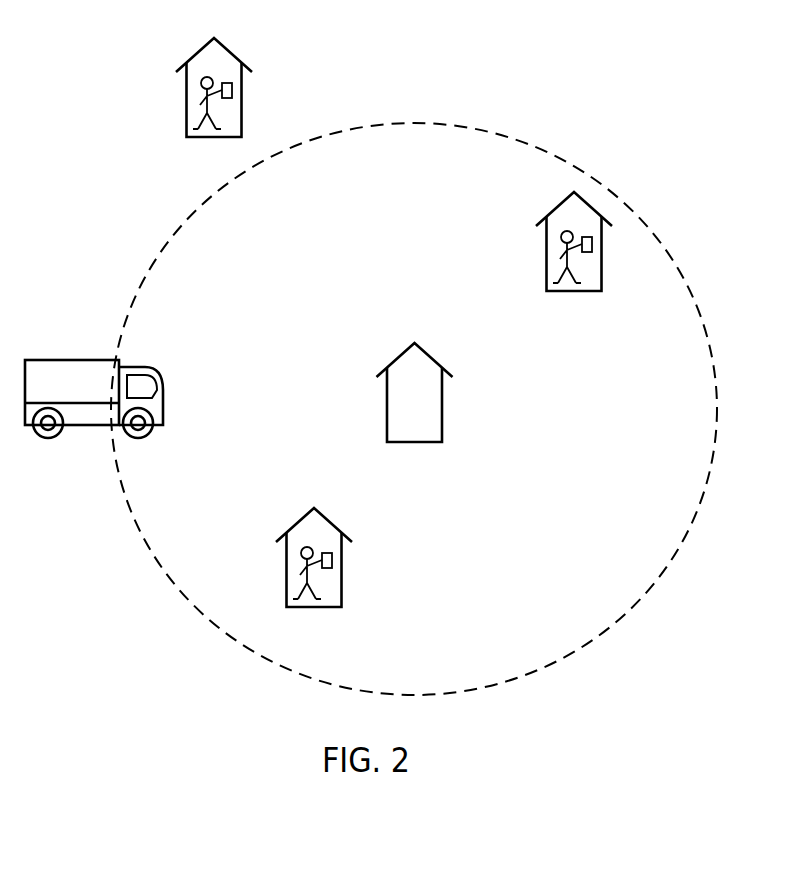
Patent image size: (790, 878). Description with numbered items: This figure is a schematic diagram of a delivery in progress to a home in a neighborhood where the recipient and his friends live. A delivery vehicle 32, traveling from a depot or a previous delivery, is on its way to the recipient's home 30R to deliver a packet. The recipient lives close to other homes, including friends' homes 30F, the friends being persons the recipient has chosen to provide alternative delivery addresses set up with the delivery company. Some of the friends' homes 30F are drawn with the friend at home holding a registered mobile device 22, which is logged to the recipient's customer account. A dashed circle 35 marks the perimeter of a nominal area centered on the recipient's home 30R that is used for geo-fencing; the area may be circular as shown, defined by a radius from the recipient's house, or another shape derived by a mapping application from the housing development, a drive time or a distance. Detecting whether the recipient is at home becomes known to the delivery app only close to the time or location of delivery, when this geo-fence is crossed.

The mobile device 22 is at (588, 253).
The friends' homes 30F is at (186, 101).
The recipient's home 30R is at (386, 408).
The delivery vehicle 32 is at (90, 359).
The dashed circle 35 is at (610, 628).